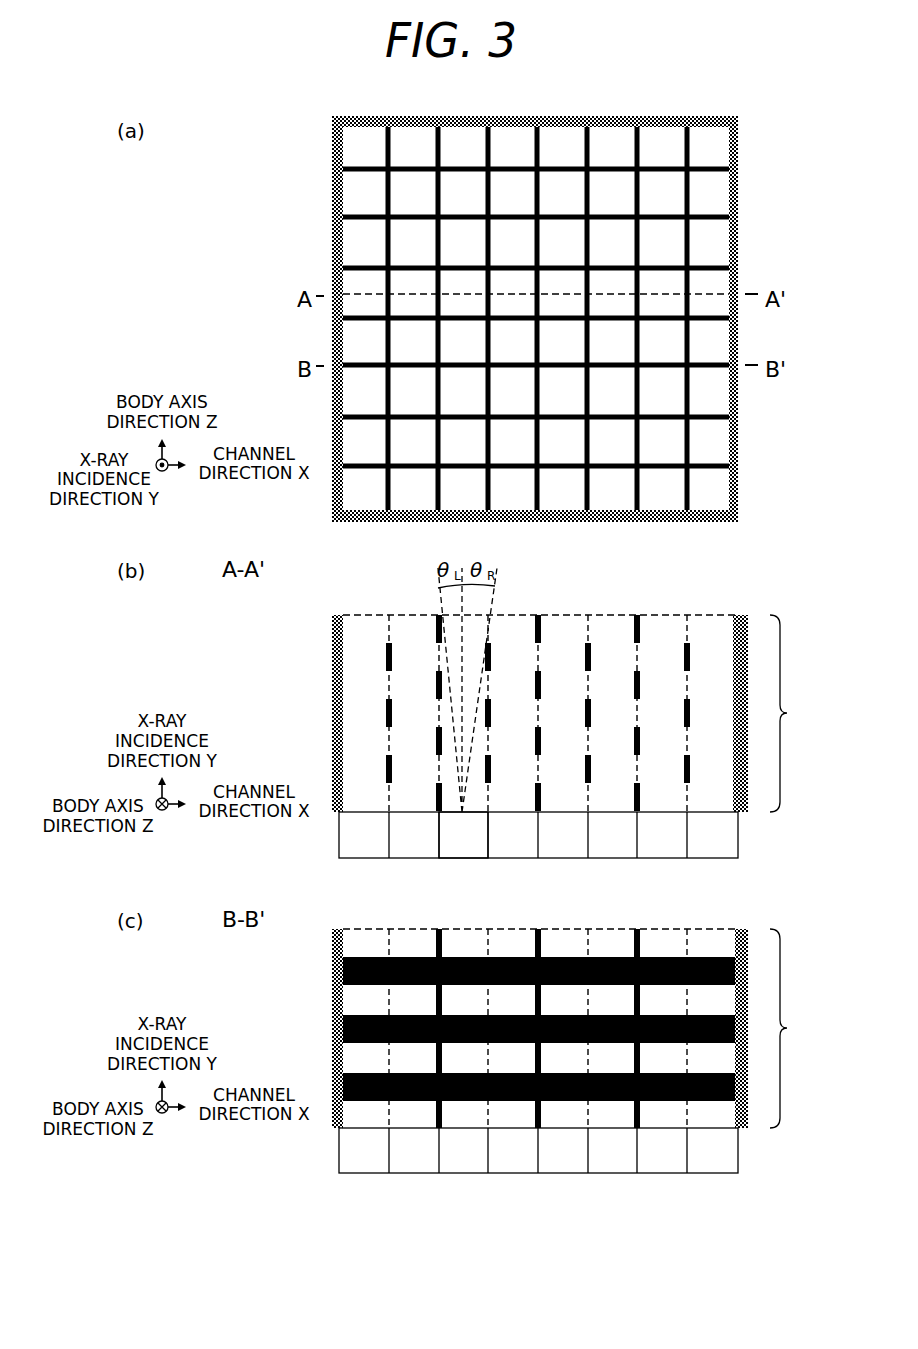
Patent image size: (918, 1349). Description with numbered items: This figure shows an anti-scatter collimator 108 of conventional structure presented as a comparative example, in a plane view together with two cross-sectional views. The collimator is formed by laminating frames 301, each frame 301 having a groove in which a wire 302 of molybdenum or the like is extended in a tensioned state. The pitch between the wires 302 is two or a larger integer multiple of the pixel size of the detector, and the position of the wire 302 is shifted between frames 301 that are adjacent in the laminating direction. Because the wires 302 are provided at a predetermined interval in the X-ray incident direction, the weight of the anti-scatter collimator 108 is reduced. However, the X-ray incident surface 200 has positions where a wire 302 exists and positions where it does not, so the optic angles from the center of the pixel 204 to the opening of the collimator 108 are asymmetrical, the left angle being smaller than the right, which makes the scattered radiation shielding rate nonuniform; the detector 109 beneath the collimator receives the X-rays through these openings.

The anti-scatter collimator 108 is at (744, 176).
The X-ray detector 109 is at (739, 838).
The X-ray incident surface 200 is at (617, 615).
The pixel 204 is at (462, 858).
The frame 301 is at (333, 612).
The wire 302 is at (540, 633).